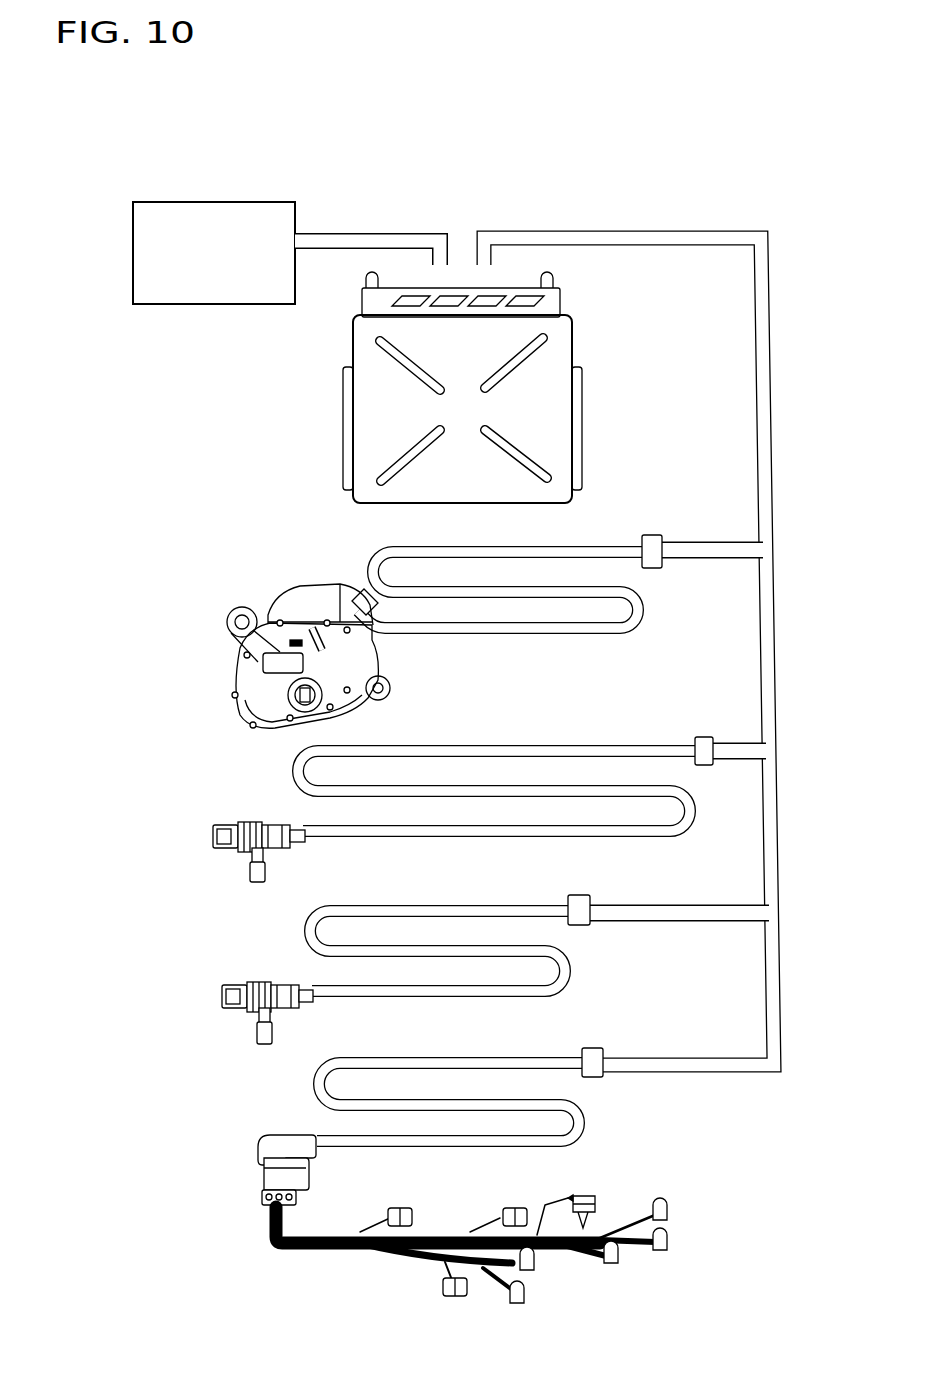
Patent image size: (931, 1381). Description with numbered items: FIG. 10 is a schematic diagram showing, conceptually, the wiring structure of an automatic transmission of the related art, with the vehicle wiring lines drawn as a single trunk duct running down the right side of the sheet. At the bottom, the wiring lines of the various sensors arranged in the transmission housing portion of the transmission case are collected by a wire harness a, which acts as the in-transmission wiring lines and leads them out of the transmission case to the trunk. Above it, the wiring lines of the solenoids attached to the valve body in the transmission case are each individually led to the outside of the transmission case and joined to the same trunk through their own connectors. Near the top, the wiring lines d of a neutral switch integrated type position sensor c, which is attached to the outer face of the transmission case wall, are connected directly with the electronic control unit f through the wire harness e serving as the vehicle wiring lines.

The wire harness a is at (318, 1252).
The neutral switch integrated type position sensor c is at (250, 678).
The wiring lines d is at (494, 633).
The wire harness e is at (781, 618).
The electronic control unit f is at (560, 417).